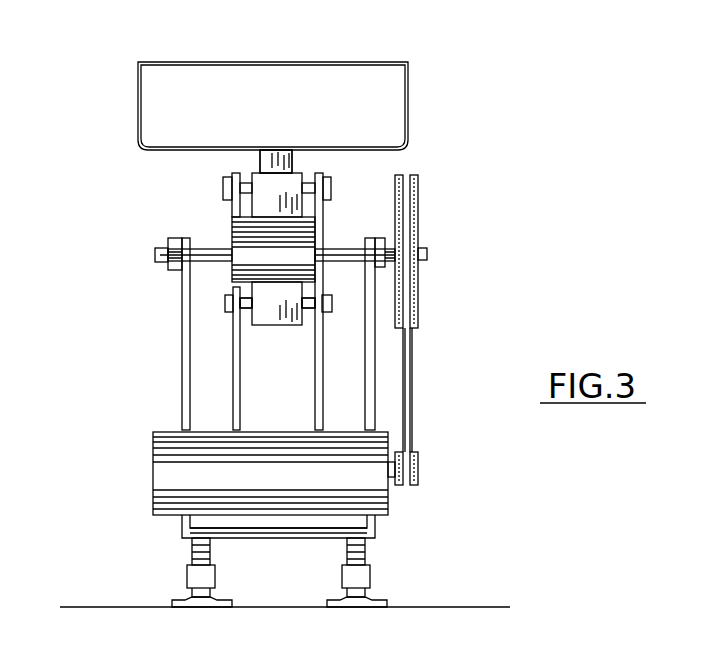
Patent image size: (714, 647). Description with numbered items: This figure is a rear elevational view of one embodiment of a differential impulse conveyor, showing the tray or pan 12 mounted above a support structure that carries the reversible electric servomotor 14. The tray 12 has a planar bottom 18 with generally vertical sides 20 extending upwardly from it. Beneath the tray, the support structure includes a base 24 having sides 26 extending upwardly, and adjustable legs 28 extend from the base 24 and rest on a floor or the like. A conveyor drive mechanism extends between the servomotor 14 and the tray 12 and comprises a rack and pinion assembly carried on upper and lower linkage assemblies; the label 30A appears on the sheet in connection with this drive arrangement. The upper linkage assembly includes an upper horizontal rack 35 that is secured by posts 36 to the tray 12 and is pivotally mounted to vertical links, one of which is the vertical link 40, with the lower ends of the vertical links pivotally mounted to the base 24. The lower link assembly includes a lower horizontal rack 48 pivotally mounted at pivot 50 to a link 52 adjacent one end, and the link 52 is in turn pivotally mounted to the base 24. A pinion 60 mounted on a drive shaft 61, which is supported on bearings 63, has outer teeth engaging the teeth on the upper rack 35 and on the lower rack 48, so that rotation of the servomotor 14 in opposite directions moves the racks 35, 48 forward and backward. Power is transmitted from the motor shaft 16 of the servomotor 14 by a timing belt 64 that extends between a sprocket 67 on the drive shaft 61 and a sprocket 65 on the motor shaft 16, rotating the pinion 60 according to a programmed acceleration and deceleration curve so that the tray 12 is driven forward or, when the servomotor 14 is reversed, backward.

The tray or pan 12 is at (292, 54).
The reversible electric servomotor 14 is at (270, 519).
The motor shaft 16 is at (392, 478).
The planar bottom 18 is at (253, 148).
The vertical sides 20 is at (138, 110).
The base 24 is at (298, 538).
The sides 26 is at (183, 342).
The adjustable legs 28 is at (195, 575).
The drive unit 30A is at (612, 642).
The upper horizontal rack 35 is at (288, 192).
The posts 36 is at (263, 164).
The vertical link 40 is at (233, 211).
The lower horizontal rack 48 is at (262, 297).
The pivot 50 is at (307, 309).
The link 52 is at (235, 330).
The pinion 60 is at (252, 225).
The drive shaft 61 is at (155, 256).
The bearings 63 is at (168, 241).
The timing belt 64 is at (410, 320).
The sprocket 65 is at (418, 463).
The sprocket 67 is at (418, 175).